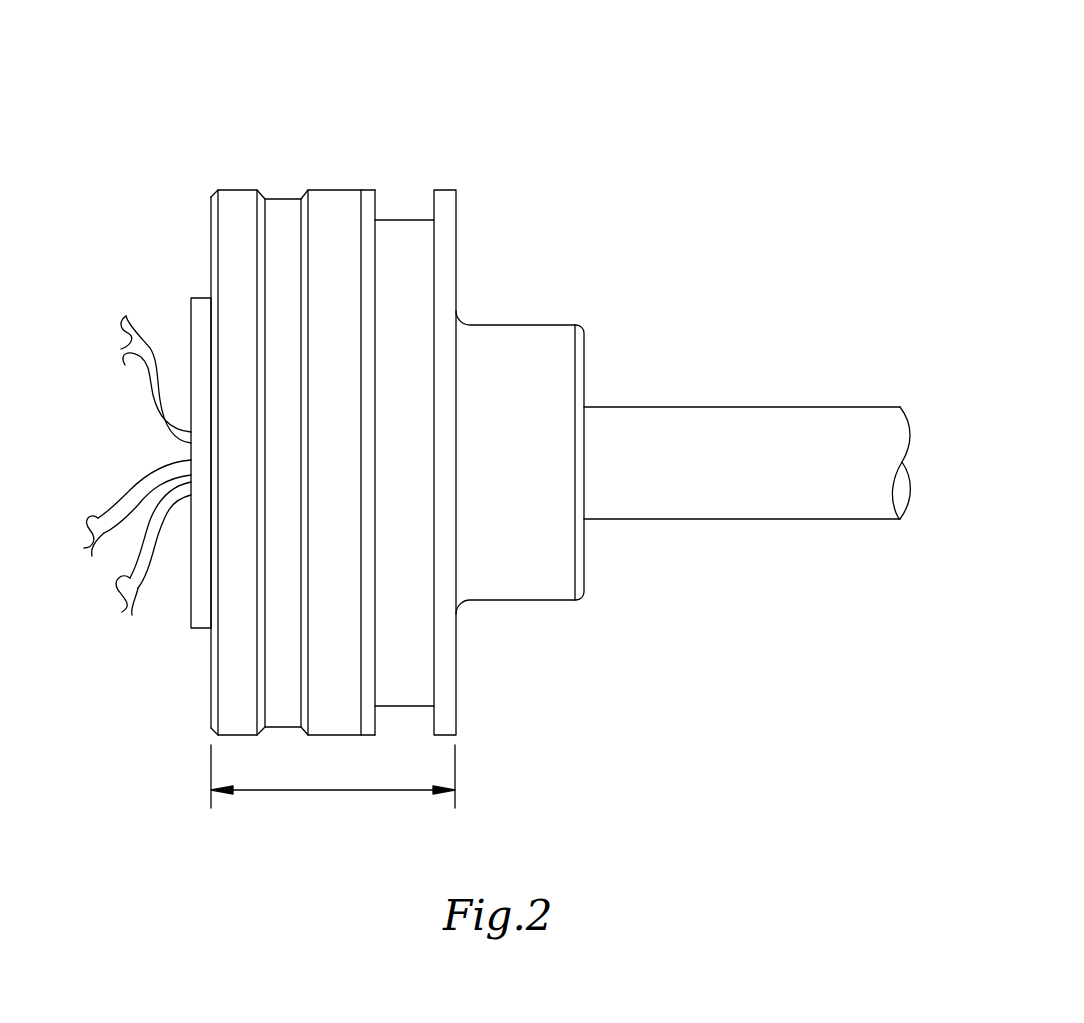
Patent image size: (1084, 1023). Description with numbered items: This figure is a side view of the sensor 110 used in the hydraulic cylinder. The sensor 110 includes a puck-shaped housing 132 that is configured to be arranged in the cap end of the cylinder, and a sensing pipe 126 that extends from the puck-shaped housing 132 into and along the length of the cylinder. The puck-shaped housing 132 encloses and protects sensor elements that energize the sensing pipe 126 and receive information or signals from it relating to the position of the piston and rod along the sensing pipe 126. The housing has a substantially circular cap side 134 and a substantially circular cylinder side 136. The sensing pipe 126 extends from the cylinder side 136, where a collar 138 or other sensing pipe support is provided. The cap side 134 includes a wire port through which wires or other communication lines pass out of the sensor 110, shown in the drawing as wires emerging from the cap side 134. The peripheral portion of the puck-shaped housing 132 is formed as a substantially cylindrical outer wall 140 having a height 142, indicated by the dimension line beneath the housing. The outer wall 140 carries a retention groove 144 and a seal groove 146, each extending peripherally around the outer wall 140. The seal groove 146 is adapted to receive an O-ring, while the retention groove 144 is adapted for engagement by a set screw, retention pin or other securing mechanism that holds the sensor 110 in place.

The sensor 110 is at (812, 72).
The sensing pipe 126 is at (837, 407).
The puck-shaped housing 132 is at (340, 189).
The cap side 134 is at (181, 279).
The cylinder side 136 is at (456, 213).
The collar 138 is at (524, 325).
The cylindrical outer wall 140 is at (333, 463).
The height 142 is at (335, 792).
The retention groove 144 is at (280, 197).
The seal groove 146 is at (402, 219).